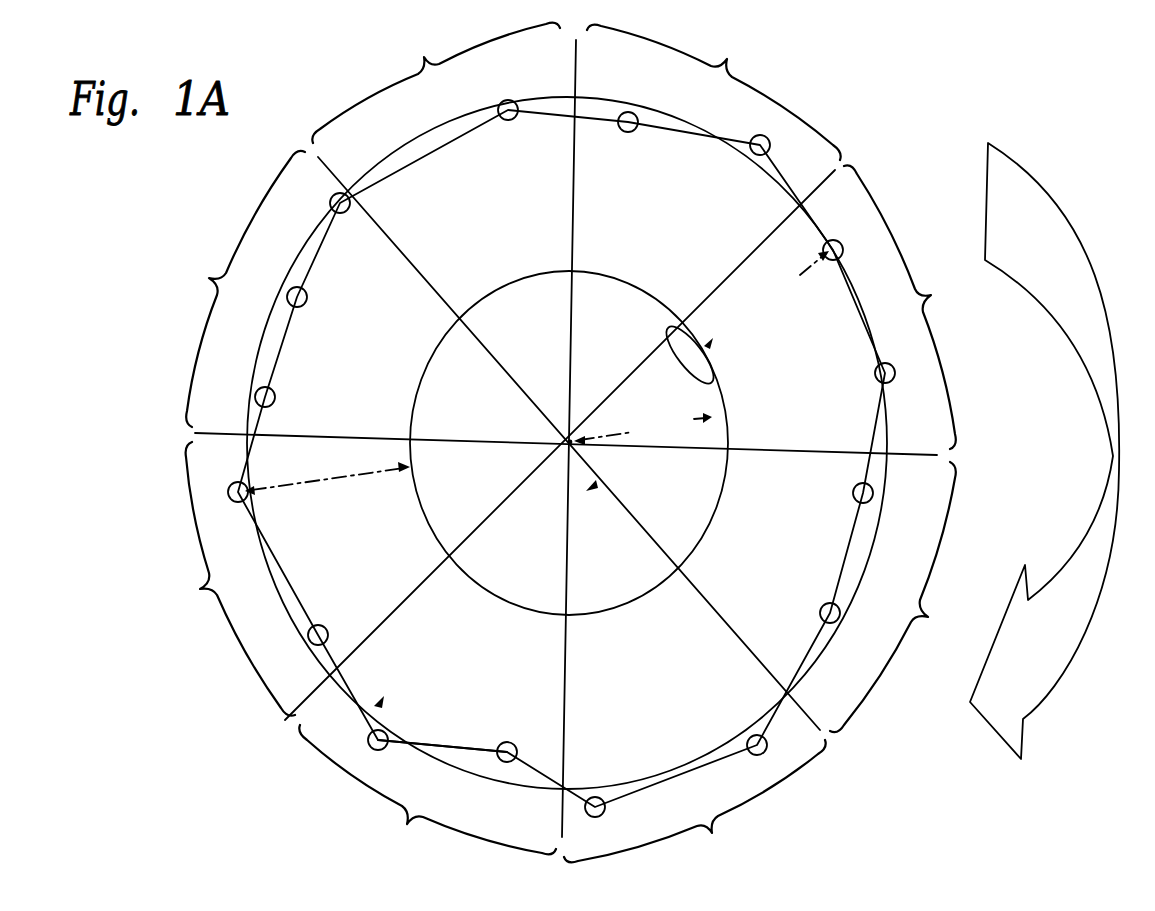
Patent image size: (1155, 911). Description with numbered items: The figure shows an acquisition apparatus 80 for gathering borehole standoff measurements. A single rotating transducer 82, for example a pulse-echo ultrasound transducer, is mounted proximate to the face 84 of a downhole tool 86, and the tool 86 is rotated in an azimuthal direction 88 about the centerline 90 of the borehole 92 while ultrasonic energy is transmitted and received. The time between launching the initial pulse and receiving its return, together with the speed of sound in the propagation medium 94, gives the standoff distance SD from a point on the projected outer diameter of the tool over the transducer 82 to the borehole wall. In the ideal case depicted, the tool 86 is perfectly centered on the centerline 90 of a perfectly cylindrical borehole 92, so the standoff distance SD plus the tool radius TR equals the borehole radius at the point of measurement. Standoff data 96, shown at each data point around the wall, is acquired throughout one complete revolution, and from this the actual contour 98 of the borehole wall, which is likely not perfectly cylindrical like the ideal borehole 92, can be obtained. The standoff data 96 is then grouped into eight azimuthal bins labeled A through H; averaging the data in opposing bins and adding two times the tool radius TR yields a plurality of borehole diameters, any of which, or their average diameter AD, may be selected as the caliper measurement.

The acquisition apparatus 80 is at (140, 234).
The transducer 82 is at (670, 328).
The face of the downhole tool 84 is at (427, 372).
The downhole tool 86 is at (640, 268).
The azimuthal direction 88 is at (1070, 667).
The centerline 90 is at (572, 443).
The borehole 92 is at (487, 782).
The propagation medium 94 is at (643, 687).
The standoff data 96 is at (511, 122).
The actual contour of the borehole wall 98 is at (460, 743).